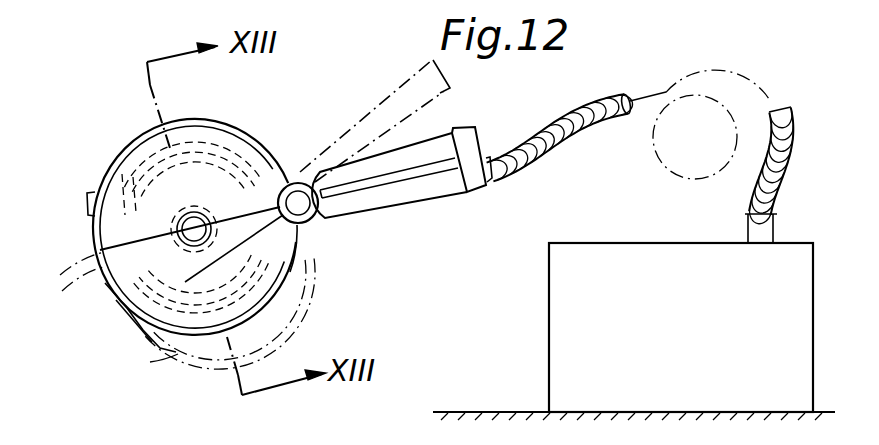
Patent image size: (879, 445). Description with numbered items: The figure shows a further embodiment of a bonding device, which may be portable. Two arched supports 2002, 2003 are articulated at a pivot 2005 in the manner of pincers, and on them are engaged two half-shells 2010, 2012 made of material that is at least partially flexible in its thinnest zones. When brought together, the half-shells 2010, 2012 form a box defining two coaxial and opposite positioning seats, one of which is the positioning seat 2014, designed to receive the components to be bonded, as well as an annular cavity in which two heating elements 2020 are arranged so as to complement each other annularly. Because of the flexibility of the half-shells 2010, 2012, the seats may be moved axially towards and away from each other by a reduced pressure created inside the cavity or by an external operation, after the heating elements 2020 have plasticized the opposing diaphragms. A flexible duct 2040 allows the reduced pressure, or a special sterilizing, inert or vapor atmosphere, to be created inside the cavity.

The arched support 2002 is at (250, 132).
The arched support 2003 is at (185, 346).
The articulation 2005 is at (318, 216).
The half-shell 2010 is at (147, 186).
The half-shell 2012 is at (281, 278).
The positioning seat 2014 is at (187, 212).
The heating element 2020 is at (174, 310).
The flexible duct 2040 is at (560, 143).